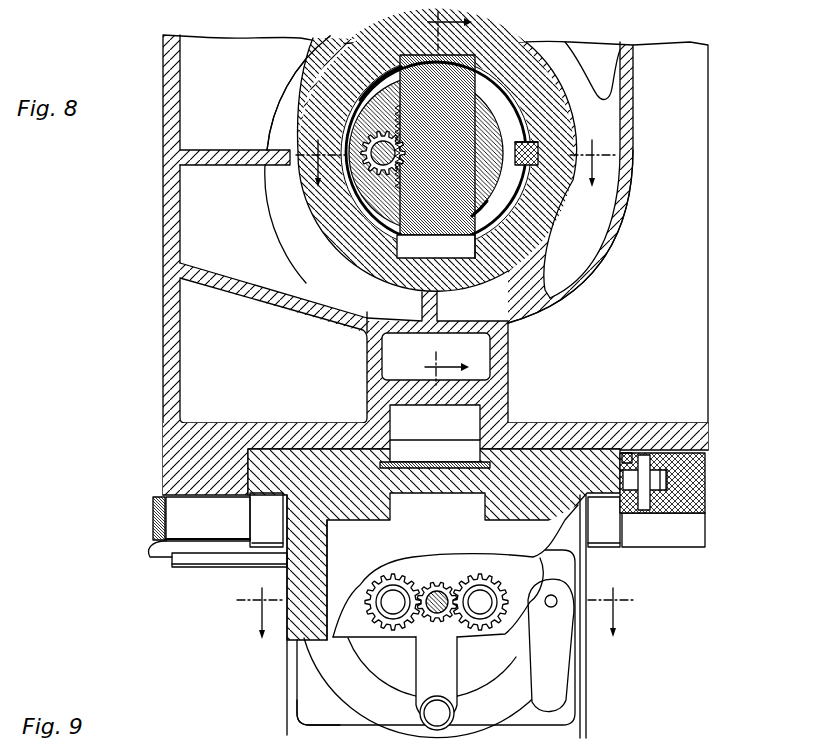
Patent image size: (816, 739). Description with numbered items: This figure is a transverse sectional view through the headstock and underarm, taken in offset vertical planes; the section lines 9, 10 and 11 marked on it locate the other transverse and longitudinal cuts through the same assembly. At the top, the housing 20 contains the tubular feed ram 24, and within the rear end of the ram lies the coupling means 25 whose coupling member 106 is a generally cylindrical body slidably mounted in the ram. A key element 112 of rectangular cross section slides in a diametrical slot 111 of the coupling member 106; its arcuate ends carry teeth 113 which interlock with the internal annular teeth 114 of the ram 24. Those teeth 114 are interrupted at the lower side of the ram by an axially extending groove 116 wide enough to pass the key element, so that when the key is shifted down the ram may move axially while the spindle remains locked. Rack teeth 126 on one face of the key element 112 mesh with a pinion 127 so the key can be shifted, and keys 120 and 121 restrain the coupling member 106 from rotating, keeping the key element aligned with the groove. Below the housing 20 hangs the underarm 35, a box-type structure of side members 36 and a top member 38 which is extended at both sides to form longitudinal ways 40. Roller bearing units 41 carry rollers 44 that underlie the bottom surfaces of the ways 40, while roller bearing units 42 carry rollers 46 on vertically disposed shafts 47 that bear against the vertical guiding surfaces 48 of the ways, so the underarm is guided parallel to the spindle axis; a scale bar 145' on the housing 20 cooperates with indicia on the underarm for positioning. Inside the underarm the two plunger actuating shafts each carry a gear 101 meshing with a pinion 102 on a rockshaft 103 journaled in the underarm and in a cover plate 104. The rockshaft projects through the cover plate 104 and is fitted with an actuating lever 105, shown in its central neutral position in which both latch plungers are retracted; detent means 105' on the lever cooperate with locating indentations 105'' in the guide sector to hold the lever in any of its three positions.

The housing 20 is at (160, 204).
The tubular feed ram 24 is at (555, 216).
The coupling means 25 is at (303, 237).
The coupling member 106 is at (522, 186).
The internal annular teeth 114 is at (508, 218).
The key element 112 is at (456, 155).
The diametrical slot 111 is at (470, 208).
The teeth 113 is at (436, 246).
The axially extending groove 116 is at (479, 250).
The pinion 127 is at (407, 150).
The rack teeth 126 is at (405, 172).
The key 120 is at (531, 166).
The key 121 is at (532, 143).
The section line 10- 10 is at (460, 198).
The section line 11- 11 is at (457, 155).
The section line 9- 9 is at (436, 613).
The top member 38 is at (343, 450).
The longitudinal ways 40 is at (262, 470).
The side members 36 is at (292, 578).
The roller bearing units 41 is at (224, 552).
The roller 44 is at (262, 517).
The scale bar 145' is at (134, 518).
The roller bearing units 42 is at (700, 482).
The rollers 46 is at (622, 477).
The vertically disposed shafts 47 is at (645, 508).
The vertical guiding surfaces 48 is at (626, 460).
The gear 101 is at (370, 588).
The pinion 102 is at (441, 580).
The rockshaft 103 is at (440, 614).
The cover plate 104 is at (515, 668).
The actuating lever 105 is at (455, 613).
The detent means 105' is at (461, 713).
The locating indentations 105'' is at (551, 645).
The underarm 35 is at (285, 709).